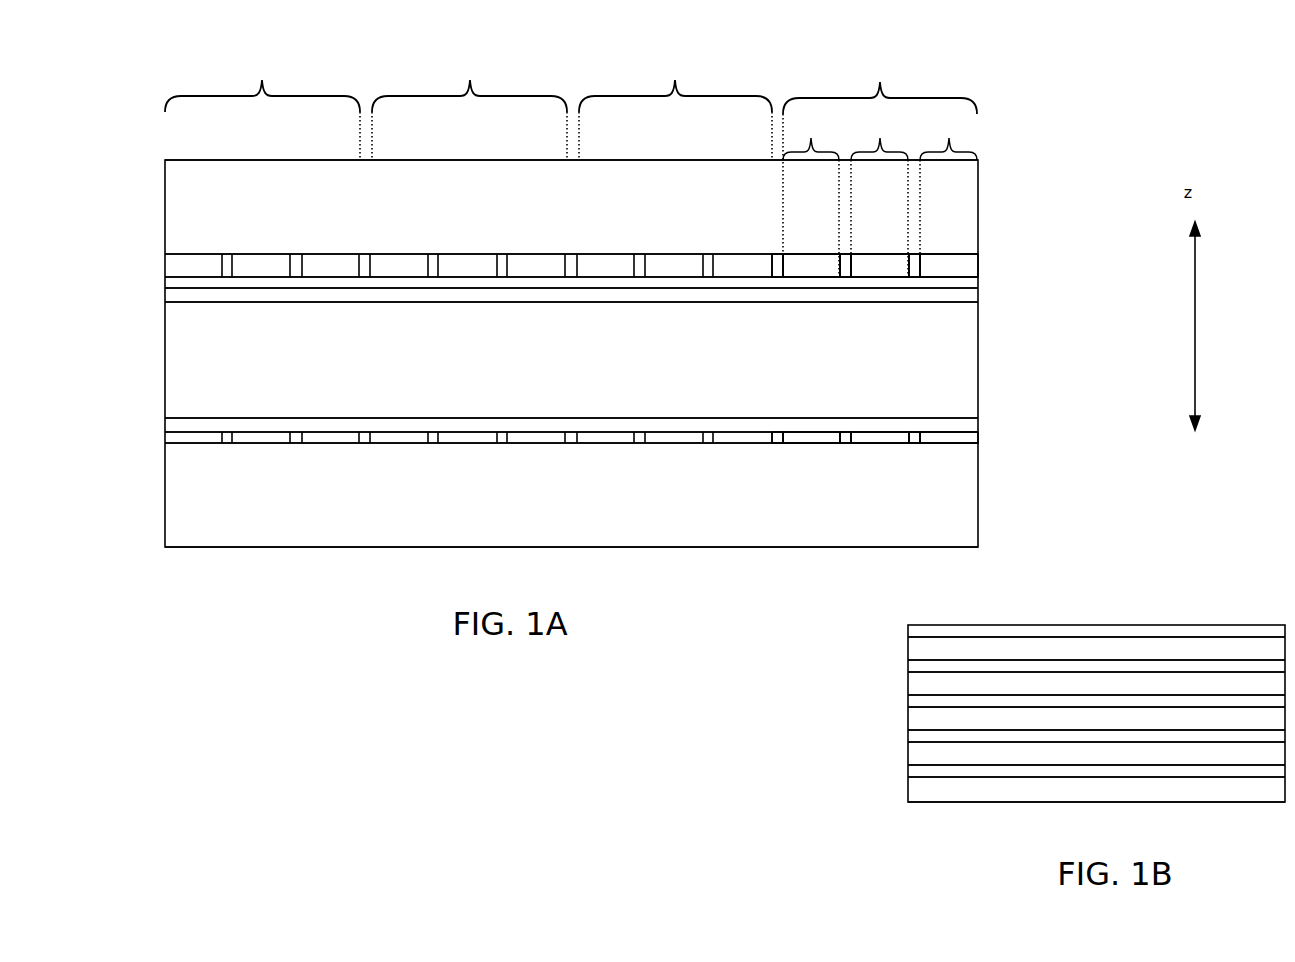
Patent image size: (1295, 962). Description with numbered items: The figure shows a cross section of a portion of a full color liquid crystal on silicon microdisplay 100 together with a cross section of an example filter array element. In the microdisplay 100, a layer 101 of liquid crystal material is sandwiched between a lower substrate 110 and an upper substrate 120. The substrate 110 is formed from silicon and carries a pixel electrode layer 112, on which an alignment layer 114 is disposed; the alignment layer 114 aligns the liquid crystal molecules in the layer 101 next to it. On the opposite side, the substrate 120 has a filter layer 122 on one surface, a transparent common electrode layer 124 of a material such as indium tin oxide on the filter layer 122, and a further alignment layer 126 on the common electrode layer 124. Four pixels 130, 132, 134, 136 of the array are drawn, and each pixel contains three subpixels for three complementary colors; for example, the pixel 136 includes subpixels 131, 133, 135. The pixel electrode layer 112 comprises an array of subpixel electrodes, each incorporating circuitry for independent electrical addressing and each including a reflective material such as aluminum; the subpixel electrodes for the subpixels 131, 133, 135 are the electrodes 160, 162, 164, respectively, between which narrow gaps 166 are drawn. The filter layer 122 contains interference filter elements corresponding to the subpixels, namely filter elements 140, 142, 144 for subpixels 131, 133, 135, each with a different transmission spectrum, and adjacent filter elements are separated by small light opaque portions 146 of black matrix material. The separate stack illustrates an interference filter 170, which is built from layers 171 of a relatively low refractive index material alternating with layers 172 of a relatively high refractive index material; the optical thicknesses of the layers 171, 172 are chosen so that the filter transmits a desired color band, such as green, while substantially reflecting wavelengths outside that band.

In FIG. 1A, the LCoS microdisplay 100 is at (232, 573).
In FIG. 1A, the layer of liquid crystal material 101 is at (978, 355).
In FIG. 1A, the substrate 110 is at (978, 498).
In FIG. 1A, the pixel electrode layer 112 is at (978, 438).
In FIG. 1A, the alignment layer 114 is at (978, 425).
In FIG. 1A, the substrate 120 is at (978, 207).
In FIG. 1A, the filter layer 122 is at (978, 265).
In FIG. 1A, the common electrode layer 124 is at (978, 283).
In FIG. 1A, the alignment layer 126 is at (978, 295).
In FIG. 1A, the pixel 130 is at (262, 106).
In FIG. 1A, the subpixel 131 is at (811, 195).
In FIG. 1A, the pixel 132 is at (469, 106).
In FIG. 1A, the subpixel 133 is at (879, 195).
In FIG. 1A, the pixel 134 is at (675, 106).
In FIG. 1A, the subpixel 135 is at (948, 195).
In FIG. 1A, the pixel 136 is at (880, 165).
In FIG. 1A, the filter element 140 is at (805, 263).
In FIG. 1A, the filter element 142 is at (873, 263).
In FIG. 1A, the filter element 144 is at (940, 263).
In FIG. 1A, the portions of black matrix material 146 is at (777, 267).
In FIG. 1A, the subpixel electrode 160 is at (820, 437).
In FIG. 1A, the subpixel electrode 162 is at (888, 437).
In FIG. 1A, the subpixel electrode 164 is at (957, 437).
In FIG. 1A, the lower electrode gap 166 is at (775, 437).
In FIG. 1B, the filter 170 is at (930, 818).
In FIG. 1B, the layers of low index material 171 is at (908, 653).
In FIG. 1B, the layers of high index material 172 is at (908, 630).